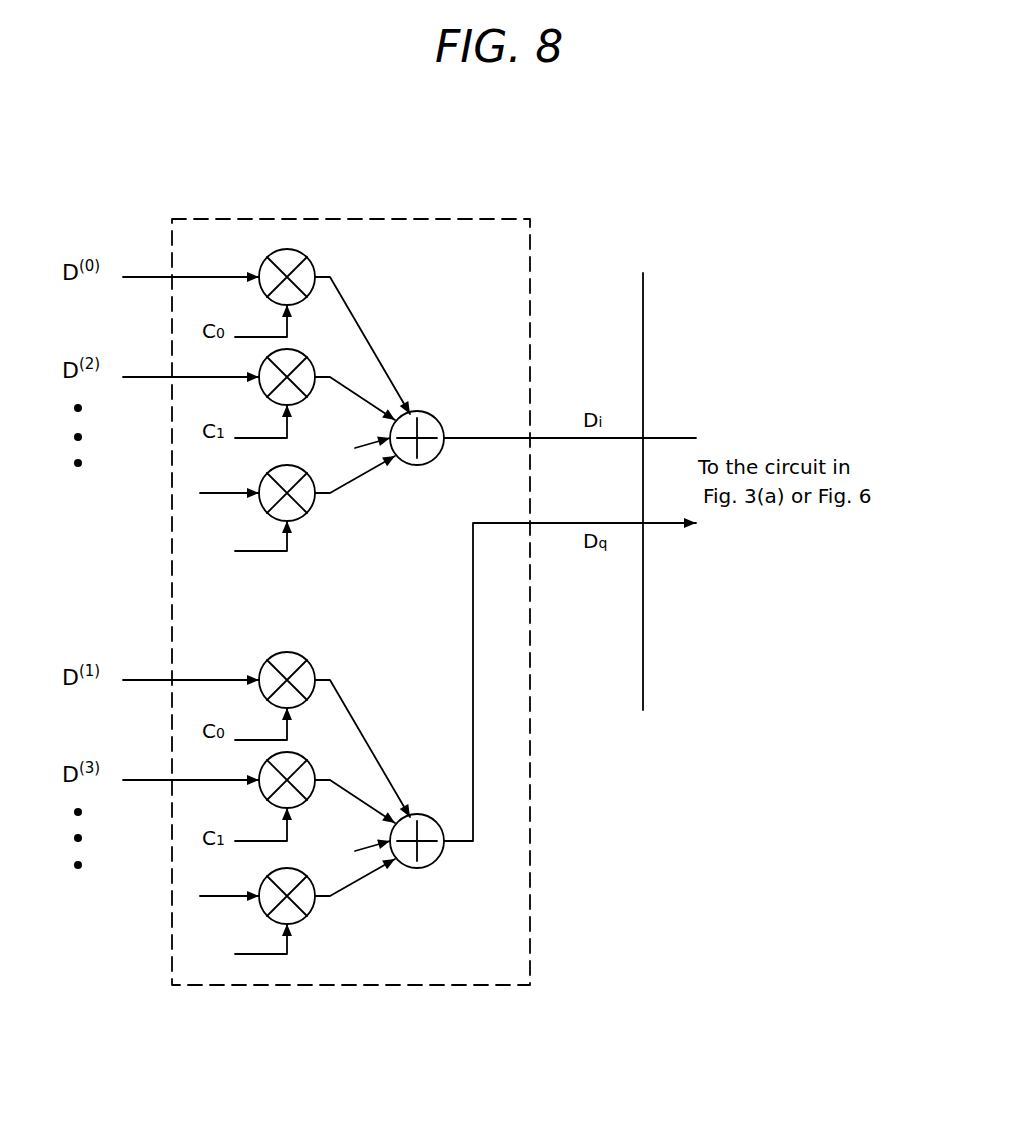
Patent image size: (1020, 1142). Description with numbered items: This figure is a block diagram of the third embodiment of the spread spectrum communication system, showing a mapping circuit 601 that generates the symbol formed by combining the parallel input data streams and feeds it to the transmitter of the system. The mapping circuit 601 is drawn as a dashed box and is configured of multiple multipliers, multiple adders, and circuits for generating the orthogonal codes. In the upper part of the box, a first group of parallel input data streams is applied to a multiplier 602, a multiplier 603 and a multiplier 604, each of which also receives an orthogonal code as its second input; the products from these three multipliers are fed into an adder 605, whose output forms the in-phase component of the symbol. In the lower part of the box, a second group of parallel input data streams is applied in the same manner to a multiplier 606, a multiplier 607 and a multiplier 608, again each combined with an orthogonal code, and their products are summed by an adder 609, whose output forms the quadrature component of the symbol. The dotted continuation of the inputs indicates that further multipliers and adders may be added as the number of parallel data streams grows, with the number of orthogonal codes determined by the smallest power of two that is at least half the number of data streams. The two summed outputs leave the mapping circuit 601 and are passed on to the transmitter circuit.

The mapping circuit 601 is at (278, 218).
The multiplier 602 is at (263, 258).
The multiplier 603 is at (300, 350).
The multiplier 604 is at (306, 513).
The adder 605 is at (427, 412).
The multiplier 606 is at (266, 718).
The multiplier 607 is at (259, 779).
The multiplier 608 is at (297, 906).
The adder 609 is at (525, 693).